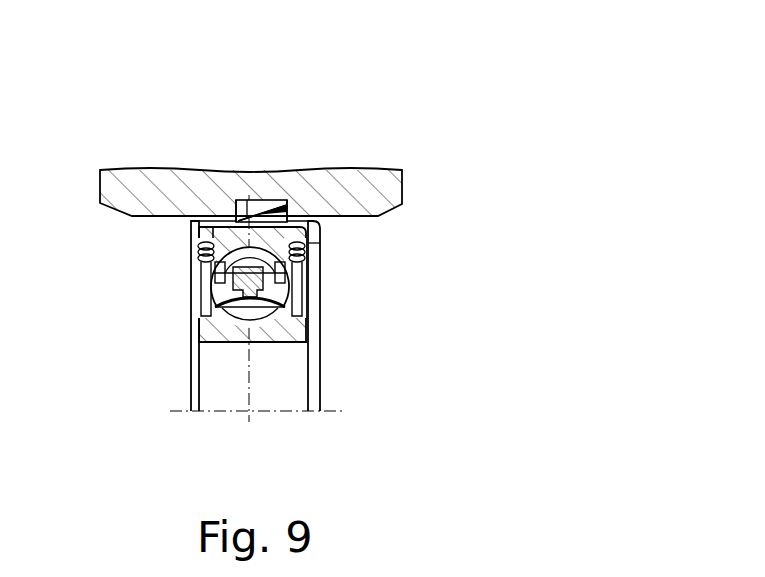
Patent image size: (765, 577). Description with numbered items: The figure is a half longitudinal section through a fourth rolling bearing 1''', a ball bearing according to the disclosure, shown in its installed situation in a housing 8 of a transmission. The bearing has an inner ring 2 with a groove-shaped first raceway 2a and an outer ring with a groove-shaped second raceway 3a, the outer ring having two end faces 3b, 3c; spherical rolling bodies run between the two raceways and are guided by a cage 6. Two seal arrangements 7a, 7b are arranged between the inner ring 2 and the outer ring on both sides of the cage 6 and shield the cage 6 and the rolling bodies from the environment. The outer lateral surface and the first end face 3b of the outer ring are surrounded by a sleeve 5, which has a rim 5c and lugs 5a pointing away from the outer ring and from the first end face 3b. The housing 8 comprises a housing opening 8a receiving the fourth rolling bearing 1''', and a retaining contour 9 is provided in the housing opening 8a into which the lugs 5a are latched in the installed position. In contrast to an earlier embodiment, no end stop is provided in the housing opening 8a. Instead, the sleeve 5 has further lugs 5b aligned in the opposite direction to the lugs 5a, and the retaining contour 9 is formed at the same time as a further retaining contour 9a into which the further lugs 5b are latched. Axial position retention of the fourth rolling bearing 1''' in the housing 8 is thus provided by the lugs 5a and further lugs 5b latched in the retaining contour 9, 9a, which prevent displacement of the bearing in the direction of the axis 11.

The fourth rolling bearing 1''' is at (144, 367).
The inner ring 2 is at (320, 325).
The first raceway 2a is at (252, 308).
The second raceway 3a is at (246, 298).
The first end face 3b is at (322, 250).
The end face 3c is at (193, 243).
The sleeve 5 is at (321, 383).
The lugs 5a is at (243, 200).
The further lugs 5b is at (280, 193).
The rim 5c is at (310, 221).
The cage 6 is at (193, 283).
The seal arrangement 7a is at (193, 291).
The seal arrangement 7b is at (320, 290).
The housing 8 is at (353, 183).
The housing opening 8a is at (376, 219).
The retaining contour 9 is at (257, 197).
The further retaining contour 9a is at (262, 213).
The axis 11 is at (330, 413).